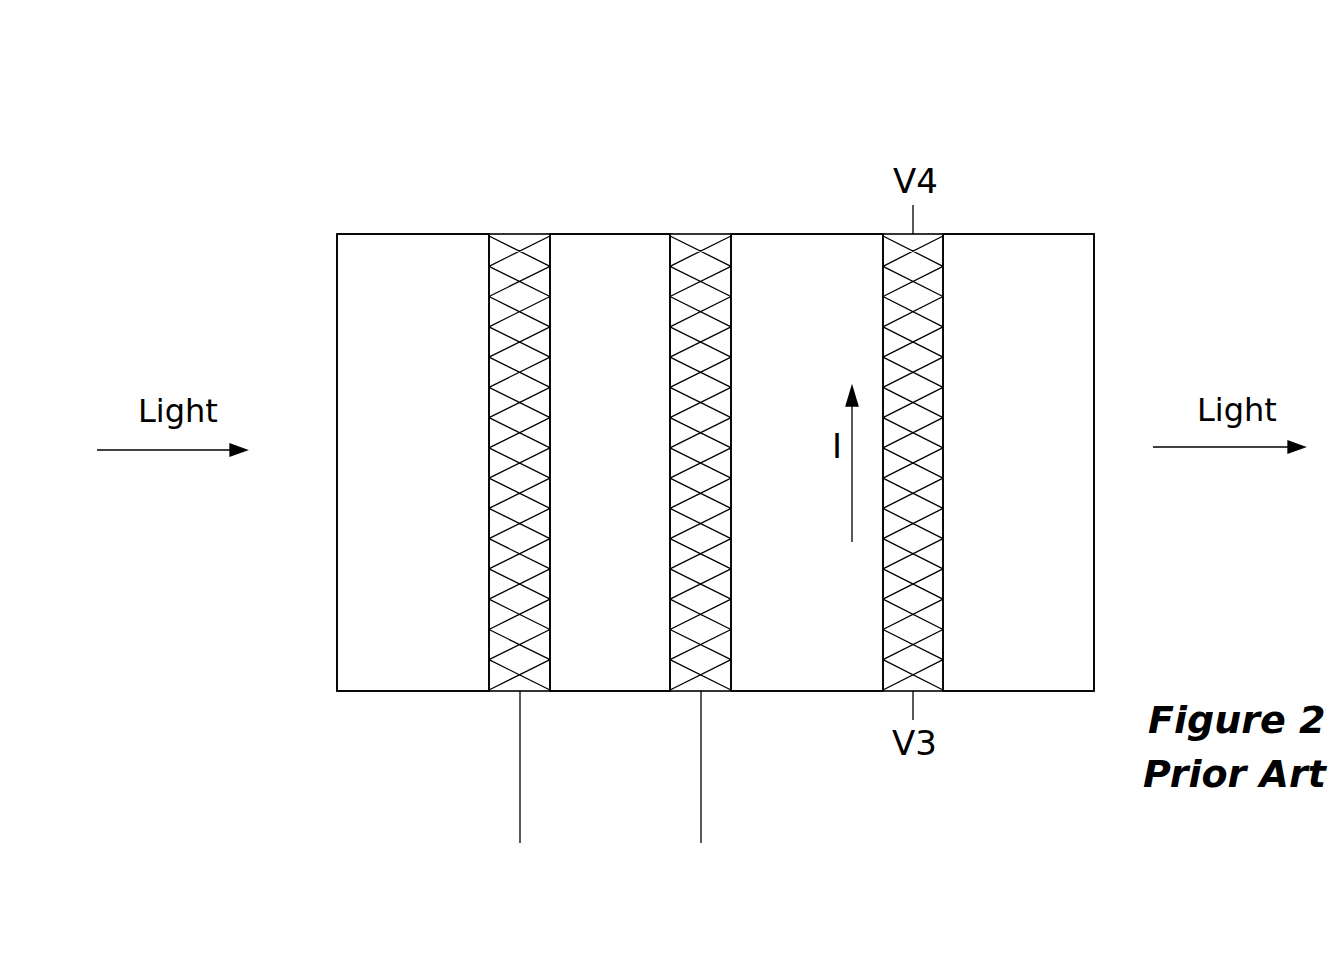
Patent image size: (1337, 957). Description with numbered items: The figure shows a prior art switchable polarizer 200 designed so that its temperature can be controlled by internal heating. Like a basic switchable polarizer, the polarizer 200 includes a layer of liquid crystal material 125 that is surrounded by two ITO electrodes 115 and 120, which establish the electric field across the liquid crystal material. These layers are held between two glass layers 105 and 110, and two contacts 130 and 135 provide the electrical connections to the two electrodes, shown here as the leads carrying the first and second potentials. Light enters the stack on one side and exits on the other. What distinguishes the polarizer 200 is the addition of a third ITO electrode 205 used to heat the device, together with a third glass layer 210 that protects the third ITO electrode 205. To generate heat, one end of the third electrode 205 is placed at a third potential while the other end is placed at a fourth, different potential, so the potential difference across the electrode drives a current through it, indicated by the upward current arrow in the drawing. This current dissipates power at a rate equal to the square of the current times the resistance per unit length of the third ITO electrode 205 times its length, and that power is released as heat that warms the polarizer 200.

The switchable polarizer 200 is at (520, 127).
The glass layer 105 is at (410, 692).
The ITO electrode 115 is at (513, 234).
The layer of liquid crystal material 125 is at (594, 234).
The ITO electrode 120 is at (699, 234).
The glass layer 110 is at (793, 691).
The third ITO electrode 205 is at (943, 323).
The third glass layer 210 is at (1007, 691).
The contact 130 is at (520, 760).
The contact 135 is at (701, 760).